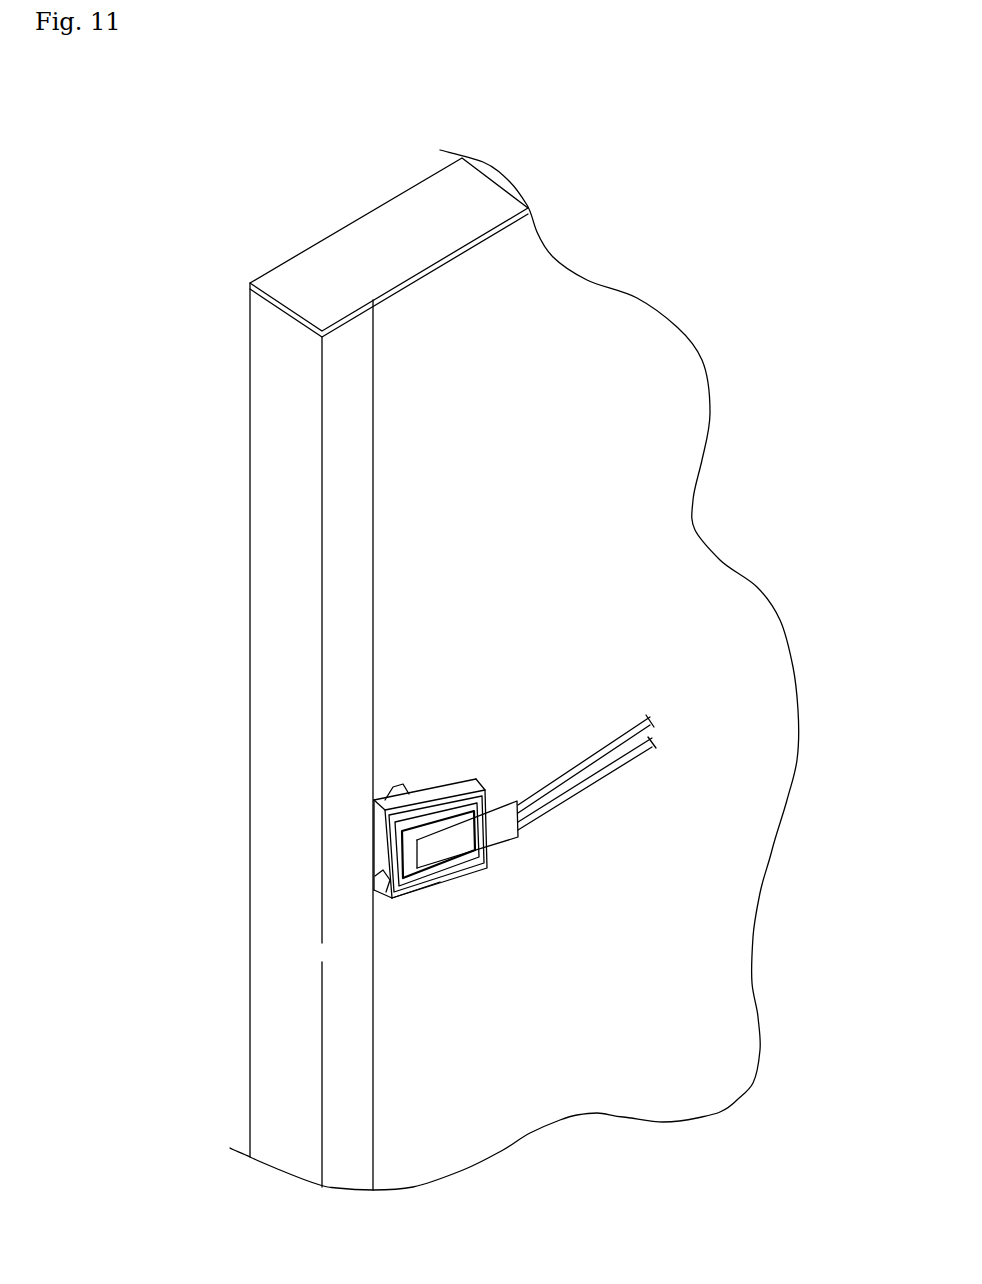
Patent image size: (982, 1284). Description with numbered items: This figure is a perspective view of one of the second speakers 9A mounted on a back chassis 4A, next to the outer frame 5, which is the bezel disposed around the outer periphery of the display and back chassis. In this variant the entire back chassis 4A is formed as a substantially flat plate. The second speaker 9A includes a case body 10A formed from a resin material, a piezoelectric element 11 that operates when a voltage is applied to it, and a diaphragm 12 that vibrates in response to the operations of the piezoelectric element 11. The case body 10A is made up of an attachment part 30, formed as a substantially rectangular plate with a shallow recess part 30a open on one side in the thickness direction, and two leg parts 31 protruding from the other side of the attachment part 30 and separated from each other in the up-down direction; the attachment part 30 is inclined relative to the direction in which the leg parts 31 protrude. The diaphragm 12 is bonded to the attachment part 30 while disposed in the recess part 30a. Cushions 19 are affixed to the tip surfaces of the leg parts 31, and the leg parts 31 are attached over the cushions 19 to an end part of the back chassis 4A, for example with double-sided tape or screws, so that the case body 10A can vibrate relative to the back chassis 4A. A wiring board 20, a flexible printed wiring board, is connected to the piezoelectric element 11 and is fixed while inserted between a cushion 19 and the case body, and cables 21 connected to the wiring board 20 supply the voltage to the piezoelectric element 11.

The outer frame 5 is at (380, 222).
The back chassis 4A is at (622, 317).
The cables 21 is at (650, 750).
The attachment part 30 is at (465, 783).
The recess part 30a is at (410, 892).
The second speaker 9A is at (447, 783).
The case body 10A is at (432, 790).
The leg parts 31 is at (410, 800).
The cushions 19 is at (385, 797).
The piezoelectric element 11 is at (407, 865).
The diaphragm 12 is at (443, 865).
The wiring board 20 is at (500, 828).